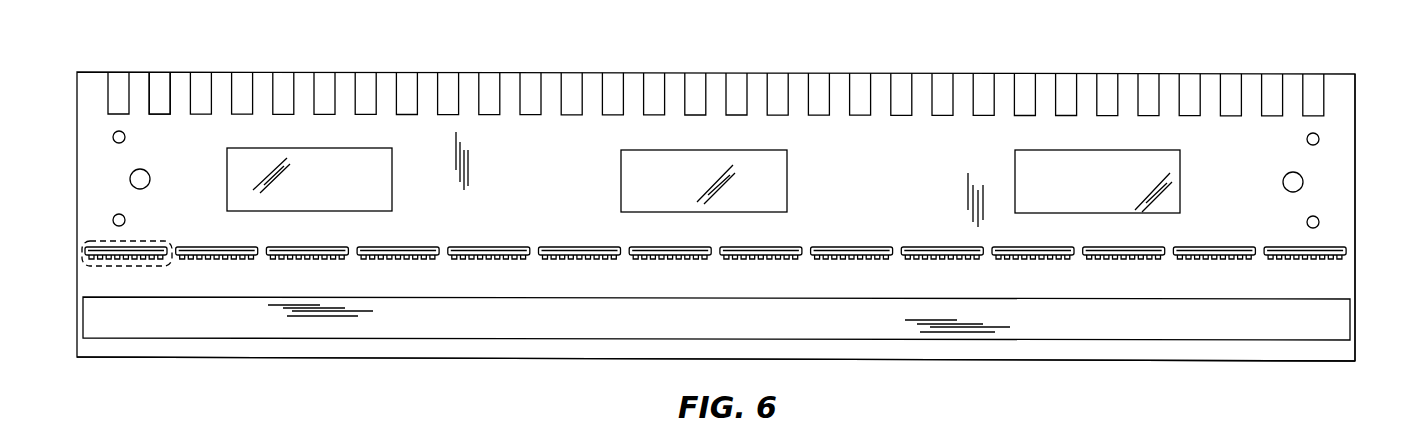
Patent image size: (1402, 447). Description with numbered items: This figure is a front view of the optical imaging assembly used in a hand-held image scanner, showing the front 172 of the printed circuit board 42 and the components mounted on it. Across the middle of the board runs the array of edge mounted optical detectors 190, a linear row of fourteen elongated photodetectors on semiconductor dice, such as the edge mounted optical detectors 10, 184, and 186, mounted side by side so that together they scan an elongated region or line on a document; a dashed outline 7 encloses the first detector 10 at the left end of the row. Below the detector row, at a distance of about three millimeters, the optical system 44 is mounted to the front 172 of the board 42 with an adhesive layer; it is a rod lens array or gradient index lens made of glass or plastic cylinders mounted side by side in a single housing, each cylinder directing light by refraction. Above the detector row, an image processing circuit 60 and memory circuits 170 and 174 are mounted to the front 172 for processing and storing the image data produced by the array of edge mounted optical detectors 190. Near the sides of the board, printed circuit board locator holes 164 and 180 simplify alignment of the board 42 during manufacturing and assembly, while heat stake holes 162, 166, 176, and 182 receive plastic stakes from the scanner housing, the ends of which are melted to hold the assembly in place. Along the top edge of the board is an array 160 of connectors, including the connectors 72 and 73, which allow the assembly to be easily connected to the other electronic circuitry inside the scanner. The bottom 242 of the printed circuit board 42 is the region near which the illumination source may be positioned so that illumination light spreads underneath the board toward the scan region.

The memory module detail region 7 is at (92, 240).
The edge mounted optical detector 10 is at (157, 270).
The printed circuit board 42 is at (1356, 140).
The optical system 44 is at (496, 334).
The image processing circuit 60 is at (343, 192).
The connector 72 is at (118, 72).
The connector 73 is at (160, 72).
The array of connectors 160 is at (1374, 97).
The heat stake hole 162 is at (125, 137).
The printed circuit board locator hole 164 is at (150, 179).
The heat stake hole 166 is at (125, 220).
The memory circuit 170 is at (679, 193).
The front of the printed circuit board 172 is at (890, 194).
The memory circuit 174 is at (1110, 193).
The heat stake hole 176 is at (1307, 139).
The printed circuit board locator hole 180 is at (1283, 182).
The heat stake hole 182 is at (1307, 222).
The edge mounted optical detector 184 is at (245, 270).
The edge mounted optical detector 186 is at (337, 270).
The array of edge mounted optical detectors 190 is at (1374, 256).
The bottom of the printed circuit board 242 is at (1108, 362).